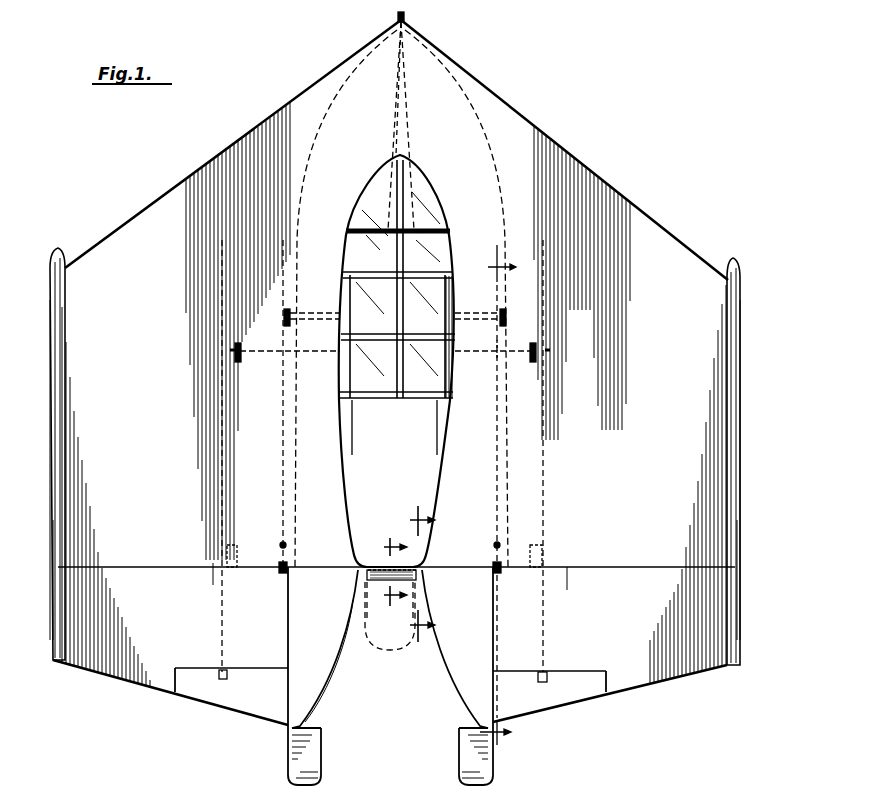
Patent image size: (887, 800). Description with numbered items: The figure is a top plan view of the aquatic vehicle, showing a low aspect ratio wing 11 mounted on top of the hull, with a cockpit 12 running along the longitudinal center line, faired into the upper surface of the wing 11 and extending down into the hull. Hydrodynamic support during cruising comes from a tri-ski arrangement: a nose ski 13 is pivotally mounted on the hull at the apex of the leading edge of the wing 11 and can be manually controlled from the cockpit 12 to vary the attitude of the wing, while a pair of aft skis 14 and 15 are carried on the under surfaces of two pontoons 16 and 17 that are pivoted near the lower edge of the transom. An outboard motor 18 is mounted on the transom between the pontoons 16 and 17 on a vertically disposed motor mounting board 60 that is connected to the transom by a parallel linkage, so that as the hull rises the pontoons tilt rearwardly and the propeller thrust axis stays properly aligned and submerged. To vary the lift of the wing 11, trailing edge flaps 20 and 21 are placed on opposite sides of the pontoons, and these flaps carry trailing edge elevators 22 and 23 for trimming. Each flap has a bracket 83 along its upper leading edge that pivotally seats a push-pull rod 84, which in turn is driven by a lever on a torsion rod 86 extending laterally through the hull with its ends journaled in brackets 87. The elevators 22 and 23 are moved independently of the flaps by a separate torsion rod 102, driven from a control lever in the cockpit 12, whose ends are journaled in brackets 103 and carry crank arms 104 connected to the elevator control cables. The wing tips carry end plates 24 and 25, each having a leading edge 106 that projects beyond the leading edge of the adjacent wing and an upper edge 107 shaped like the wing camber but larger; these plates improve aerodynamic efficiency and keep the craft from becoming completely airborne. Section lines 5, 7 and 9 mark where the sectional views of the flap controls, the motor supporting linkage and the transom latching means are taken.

The section line 5- 5 is at (505, 495).
The section line 7- 7 is at (430, 574).
The section line 9- 9 is at (386, 572).
The wing 11 is at (394, 414).
The cockpit 12 is at (345, 266).
The nose ski 13 is at (393, 128).
The aft ski 14 is at (313, 765).
The aft ski 15 is at (462, 762).
The pontoon 16 is at (322, 700).
The pontoon 17 is at (458, 676).
The outboard motor 18 is at (379, 650).
The trailing edge flap 20 is at (165, 644).
The trailing edge flap 21 is at (622, 647).
The trailing edge elevator 22 is at (231, 684).
The trailing edge elevator 23 is at (549, 688).
The end plate 24 is at (55, 452).
The end plate 25 is at (740, 438).
The motor mounting board 60 is at (414, 574).
The bracket 83 is at (283, 573).
The push-pull rod 84 is at (501, 350).
The torsion rod 86 is at (492, 314).
The bracket 87 is at (291, 313).
The torsion rod 102 is at (297, 358).
The bracket 103 is at (234, 345).
The crank arm 104 is at (230, 352).
The leading edge 106 is at (60, 255).
The upper edge 107 is at (53, 505).